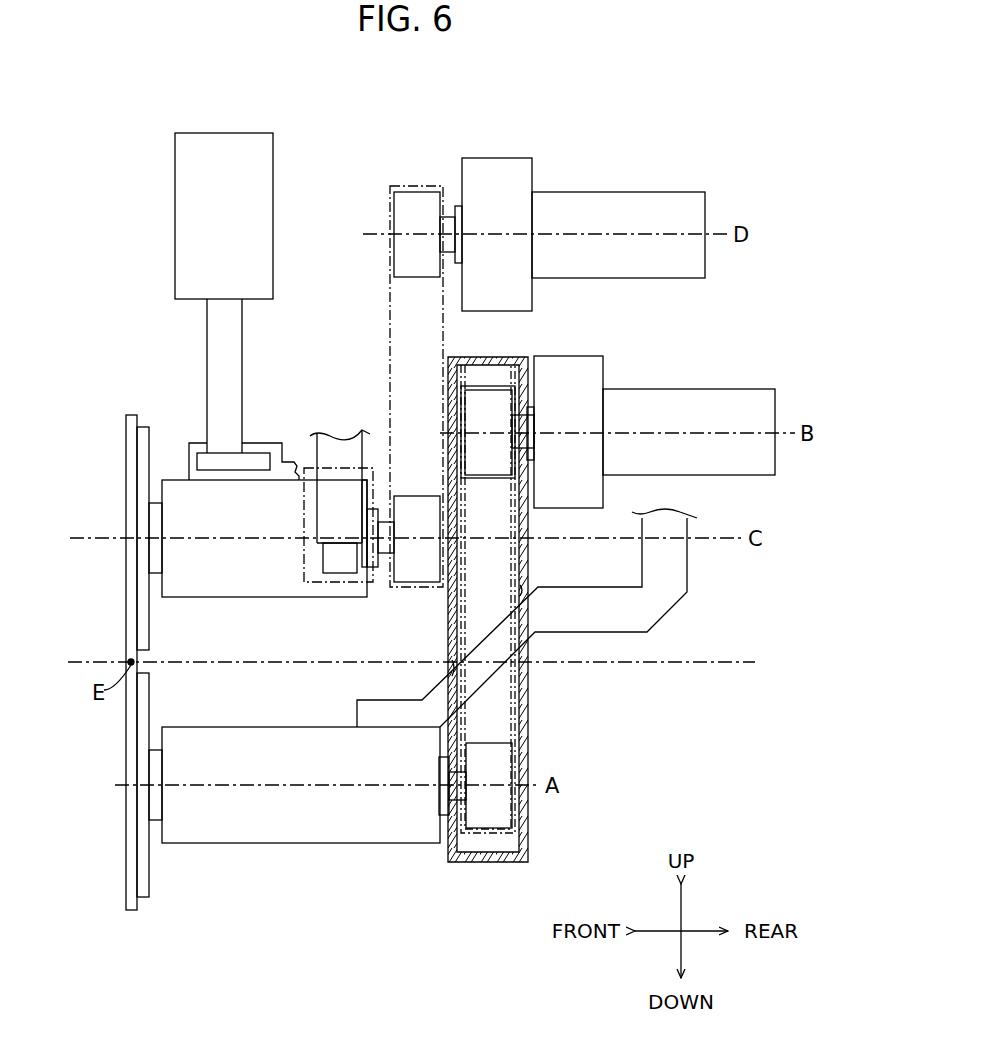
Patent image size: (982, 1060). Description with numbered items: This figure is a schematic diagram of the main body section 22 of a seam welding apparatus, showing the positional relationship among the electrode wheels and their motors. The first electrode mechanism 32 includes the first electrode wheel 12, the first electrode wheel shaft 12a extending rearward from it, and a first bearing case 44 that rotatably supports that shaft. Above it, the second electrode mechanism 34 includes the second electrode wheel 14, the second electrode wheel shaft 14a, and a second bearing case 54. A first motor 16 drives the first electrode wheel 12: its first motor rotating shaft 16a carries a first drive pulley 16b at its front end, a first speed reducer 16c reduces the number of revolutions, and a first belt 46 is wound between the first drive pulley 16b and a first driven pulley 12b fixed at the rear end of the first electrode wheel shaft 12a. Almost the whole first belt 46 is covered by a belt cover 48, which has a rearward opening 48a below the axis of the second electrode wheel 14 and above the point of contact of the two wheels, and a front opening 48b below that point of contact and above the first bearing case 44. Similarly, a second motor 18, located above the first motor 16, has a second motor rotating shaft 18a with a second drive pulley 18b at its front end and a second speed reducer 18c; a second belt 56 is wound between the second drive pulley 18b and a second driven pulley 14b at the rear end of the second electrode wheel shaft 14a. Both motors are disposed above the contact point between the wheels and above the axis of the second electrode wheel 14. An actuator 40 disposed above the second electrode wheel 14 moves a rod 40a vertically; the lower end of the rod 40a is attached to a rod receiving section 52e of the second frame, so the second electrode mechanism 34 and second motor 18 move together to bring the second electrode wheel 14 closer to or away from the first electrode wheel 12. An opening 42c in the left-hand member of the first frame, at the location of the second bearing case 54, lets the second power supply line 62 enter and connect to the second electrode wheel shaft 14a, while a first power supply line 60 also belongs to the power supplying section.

The first electrode wheel 12 is at (131, 827).
The first electrode wheel shaft 12a is at (153, 768).
The first driven pulley 12b is at (491, 808).
The second electrode wheel 14 is at (131, 445).
The second electrode wheel shaft 14a is at (153, 518).
The second driven pulley 14b is at (417, 562).
The first motor 16 is at (665, 415).
The first motor rotating shaft 16a is at (535, 422).
The first drive pulley 16b is at (484, 405).
The first speed reducer 16c is at (578, 352).
The second motor 18 is at (648, 200).
The second motor rotating shaft 18a is at (462, 226).
The second drive pulley 18b is at (415, 205).
The second speed reducer 18c is at (493, 170).
The main body section 22 is at (603, 130).
The first electrode mechanism 32 is at (273, 848).
The second electrode mechanism 34 is at (185, 393).
The actuator 40 is at (214, 148).
The rod 40a is at (222, 333).
The opening 42c is at (325, 585).
The first bearing case 44 is at (235, 745).
The first belt 46 is at (528, 727).
The belt cover 48 is at (523, 823).
The opening 48a is at (525, 590).
The opening 48b is at (450, 668).
The rod receiving section 52e is at (258, 440).
The second bearing case 54 is at (211, 567).
The second belt 56 is at (390, 325).
The first power supply line 60 is at (535, 635).
The second power supply line 62 is at (350, 450).